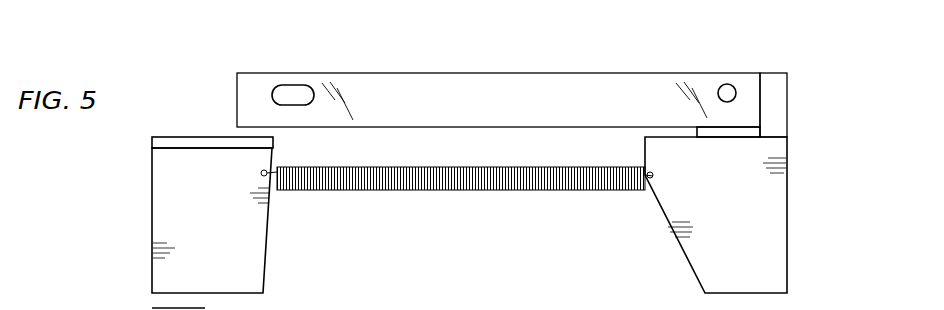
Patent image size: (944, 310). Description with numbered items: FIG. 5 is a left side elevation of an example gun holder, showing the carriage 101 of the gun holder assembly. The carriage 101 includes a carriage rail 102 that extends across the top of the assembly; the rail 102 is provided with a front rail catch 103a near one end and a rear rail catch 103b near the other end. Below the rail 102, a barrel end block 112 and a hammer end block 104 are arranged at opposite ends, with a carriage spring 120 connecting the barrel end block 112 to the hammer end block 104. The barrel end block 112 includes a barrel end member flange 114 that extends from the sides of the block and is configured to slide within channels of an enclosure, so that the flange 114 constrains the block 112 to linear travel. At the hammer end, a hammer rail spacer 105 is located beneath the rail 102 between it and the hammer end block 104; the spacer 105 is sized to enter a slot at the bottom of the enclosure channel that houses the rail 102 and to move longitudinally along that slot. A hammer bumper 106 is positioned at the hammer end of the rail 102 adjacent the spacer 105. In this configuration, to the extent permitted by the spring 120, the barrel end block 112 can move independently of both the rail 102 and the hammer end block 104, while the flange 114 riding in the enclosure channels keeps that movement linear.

The carriage 101 is at (182, 80).
The carriage rail 102 is at (600, 82).
The front rail catch 103a is at (720, 86).
The rear rail catch 103b is at (279, 85).
The hammer end block 104 is at (777, 217).
The hammer rail spacer 105 is at (705, 131).
The hammer bumper 106 is at (779, 94).
The barrel end block 112 is at (162, 183).
The barrel end member flange 114 is at (162, 143).
The carriage spring 120 is at (358, 181).